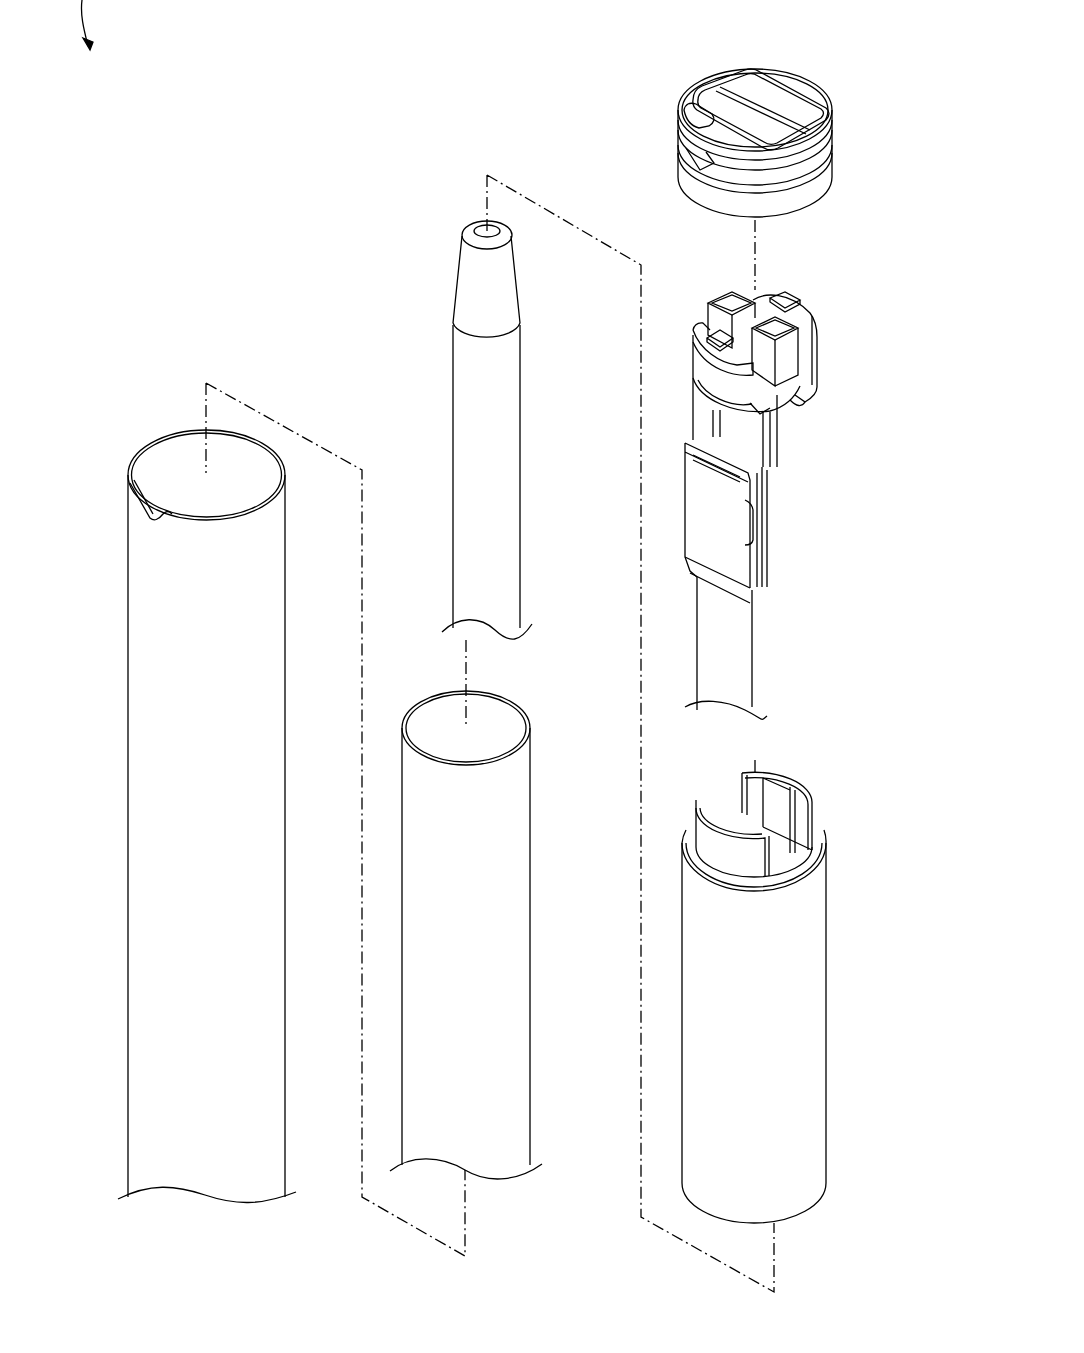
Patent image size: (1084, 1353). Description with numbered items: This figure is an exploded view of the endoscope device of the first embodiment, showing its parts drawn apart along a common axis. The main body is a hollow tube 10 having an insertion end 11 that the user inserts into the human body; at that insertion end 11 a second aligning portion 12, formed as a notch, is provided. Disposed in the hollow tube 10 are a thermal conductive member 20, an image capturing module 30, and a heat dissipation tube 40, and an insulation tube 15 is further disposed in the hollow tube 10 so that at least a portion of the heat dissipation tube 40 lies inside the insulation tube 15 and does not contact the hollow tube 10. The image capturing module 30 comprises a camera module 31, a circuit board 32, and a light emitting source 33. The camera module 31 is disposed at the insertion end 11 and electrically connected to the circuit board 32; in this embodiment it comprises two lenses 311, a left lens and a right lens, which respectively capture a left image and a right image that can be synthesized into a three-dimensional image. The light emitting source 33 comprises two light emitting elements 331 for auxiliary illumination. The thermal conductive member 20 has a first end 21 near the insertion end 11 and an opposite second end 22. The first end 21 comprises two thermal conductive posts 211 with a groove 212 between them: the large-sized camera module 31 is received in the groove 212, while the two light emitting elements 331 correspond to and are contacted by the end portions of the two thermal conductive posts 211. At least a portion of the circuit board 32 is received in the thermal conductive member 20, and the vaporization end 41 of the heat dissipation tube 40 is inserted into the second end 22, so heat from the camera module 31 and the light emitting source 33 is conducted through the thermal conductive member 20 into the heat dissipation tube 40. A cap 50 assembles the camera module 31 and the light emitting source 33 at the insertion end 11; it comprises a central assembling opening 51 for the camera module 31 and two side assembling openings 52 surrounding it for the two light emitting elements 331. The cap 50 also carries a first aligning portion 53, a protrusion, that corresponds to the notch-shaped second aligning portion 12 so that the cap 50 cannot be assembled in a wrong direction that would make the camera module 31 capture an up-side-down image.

The hollow tube 10 is at (128, 588).
The insertion end 11 is at (160, 454).
The second aligning portion 12 is at (152, 521).
The insulation tube 15 is at (530, 722).
The thermal conductive member 20 is at (826, 1115).
The first end 21 is at (815, 855).
The second end 22 is at (800, 1200).
The image capturing module 30 is at (878, 385).
The camera module 31 is at (800, 396).
The circuit board 32 is at (737, 518).
The light emitting source 33 is at (888, 280).
The heat dissipation tube 40 is at (522, 355).
The vaporization end 41 is at (502, 270).
The cap 50 is at (820, 95).
The central assembling opening 51 is at (740, 92).
The side assembling opening 52 is at (778, 85).
The first aligning portion 53 is at (690, 163).
The thermal conductive post 211 is at (803, 793).
The groove 212 is at (783, 830).
The lens 311 is at (727, 300).
The light emitting element 331 is at (802, 300).